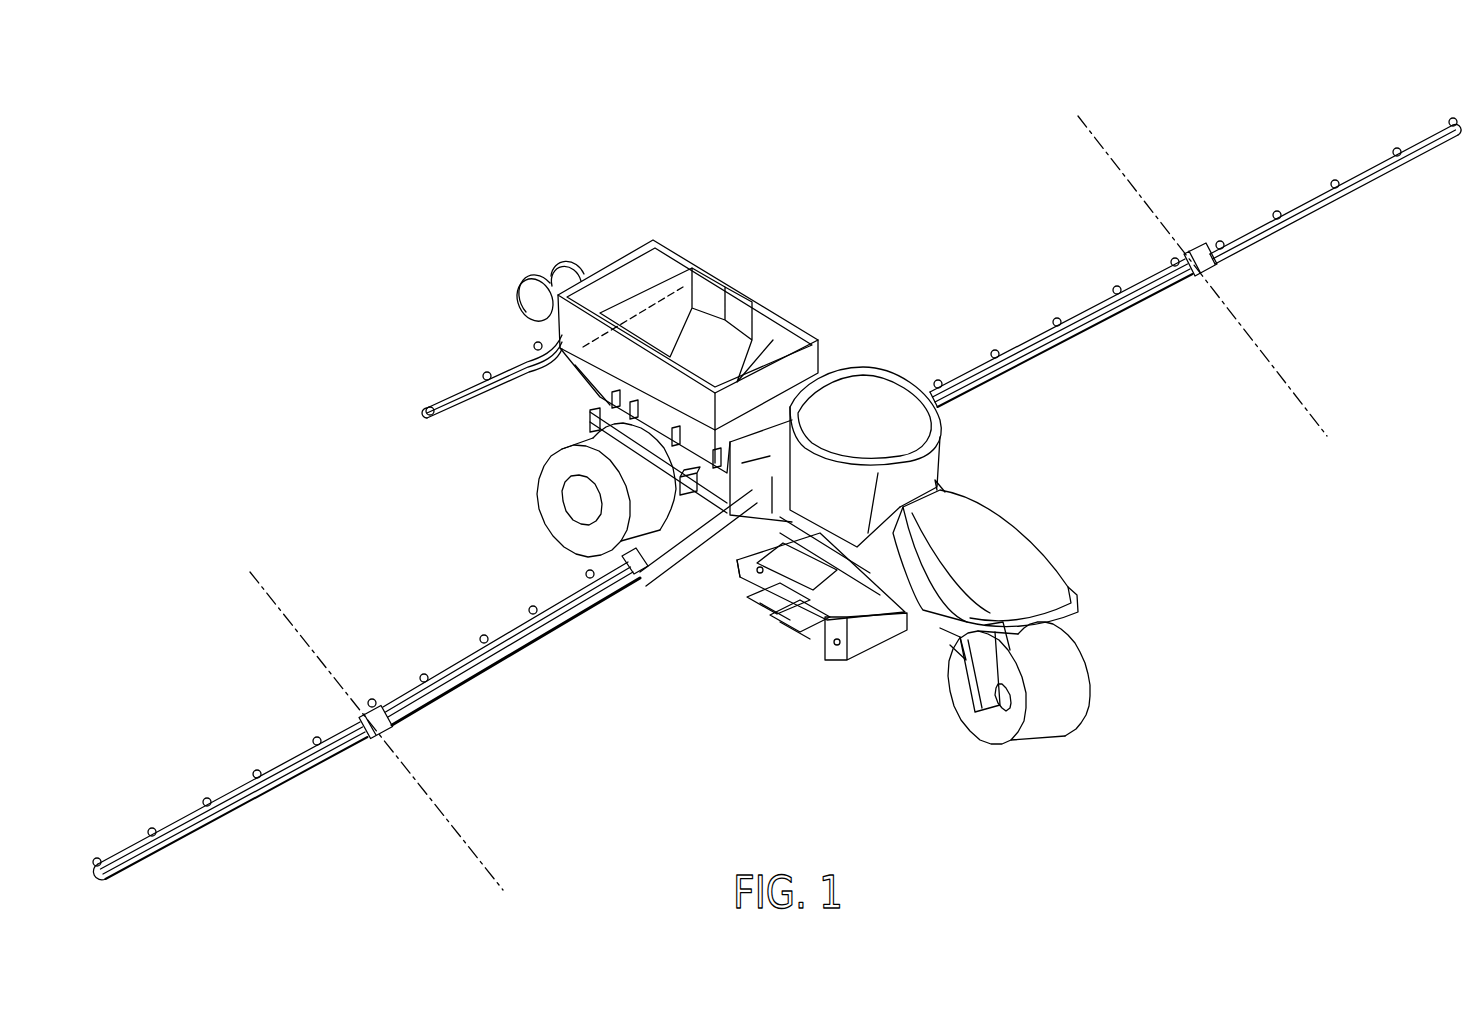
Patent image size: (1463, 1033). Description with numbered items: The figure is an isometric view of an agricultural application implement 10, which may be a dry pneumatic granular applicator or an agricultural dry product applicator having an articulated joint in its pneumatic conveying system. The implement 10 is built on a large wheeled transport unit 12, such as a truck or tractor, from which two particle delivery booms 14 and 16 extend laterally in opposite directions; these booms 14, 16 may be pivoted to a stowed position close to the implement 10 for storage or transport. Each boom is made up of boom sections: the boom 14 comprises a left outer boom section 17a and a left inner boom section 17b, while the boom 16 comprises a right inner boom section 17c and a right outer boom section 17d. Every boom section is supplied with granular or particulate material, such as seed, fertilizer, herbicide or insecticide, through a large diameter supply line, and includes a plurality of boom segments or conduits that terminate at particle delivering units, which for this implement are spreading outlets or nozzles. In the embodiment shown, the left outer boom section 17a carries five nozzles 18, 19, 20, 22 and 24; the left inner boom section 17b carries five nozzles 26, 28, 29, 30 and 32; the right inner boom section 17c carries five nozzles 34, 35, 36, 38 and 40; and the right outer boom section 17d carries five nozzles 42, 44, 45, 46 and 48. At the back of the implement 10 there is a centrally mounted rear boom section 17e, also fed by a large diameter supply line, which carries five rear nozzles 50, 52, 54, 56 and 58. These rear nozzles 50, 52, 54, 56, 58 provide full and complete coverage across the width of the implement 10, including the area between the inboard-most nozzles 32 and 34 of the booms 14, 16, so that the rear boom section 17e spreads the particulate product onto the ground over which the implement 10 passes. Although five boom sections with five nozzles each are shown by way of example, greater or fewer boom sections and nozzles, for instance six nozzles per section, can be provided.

The agricultural application implement 10 is at (824, 689).
The wheeled transport unit 12 is at (755, 631).
The particle delivery boom 14 is at (1020, 333).
The particle delivery boom 16 is at (502, 678).
The left outer boom section 17a is at (1316, 245).
The left inner boom section 17b is at (1075, 371).
The right inner boom section 17c is at (485, 690).
The right outer boom section 17d is at (295, 802).
The rear boom section 17e is at (386, 375).
The nozzle 18 is at (1455, 124).
The nozzle 19 is at (1395, 150).
The nozzle 20 is at (1333, 180).
The nozzle 22 is at (1275, 213).
The nozzle 24 is at (1218, 241).
The nozzle 26 is at (1177, 264).
The nozzle 28 is at (1115, 296).
The nozzle 29 is at (1055, 319).
The nozzle 30 is at (993, 356).
The nozzle 32 is at (935, 381).
The nozzle 34 is at (589, 572).
The nozzle 35 is at (532, 607).
The nozzle 36 is at (482, 636).
The nozzle 38 is at (423, 676).
The nozzle 40 is at (370, 700).
The nozzle 42 is at (316, 738).
The nozzle 44 is at (255, 773).
The nozzle 45 is at (205, 800).
The nozzle 46 is at (150, 835).
The nozzle 48 is at (95, 866).
The rear nozzle 50 is at (652, 288).
The rear nozzle 52 is at (643, 280).
The rear nozzle 54 is at (536, 343).
The rear nozzle 56 is at (485, 372).
The rear nozzle 58 is at (426, 410).